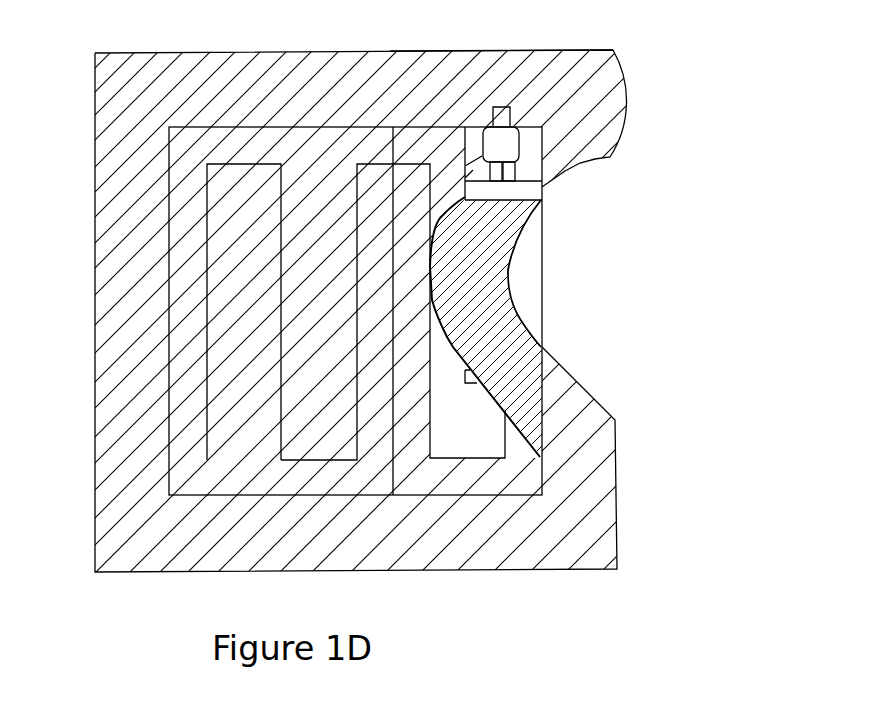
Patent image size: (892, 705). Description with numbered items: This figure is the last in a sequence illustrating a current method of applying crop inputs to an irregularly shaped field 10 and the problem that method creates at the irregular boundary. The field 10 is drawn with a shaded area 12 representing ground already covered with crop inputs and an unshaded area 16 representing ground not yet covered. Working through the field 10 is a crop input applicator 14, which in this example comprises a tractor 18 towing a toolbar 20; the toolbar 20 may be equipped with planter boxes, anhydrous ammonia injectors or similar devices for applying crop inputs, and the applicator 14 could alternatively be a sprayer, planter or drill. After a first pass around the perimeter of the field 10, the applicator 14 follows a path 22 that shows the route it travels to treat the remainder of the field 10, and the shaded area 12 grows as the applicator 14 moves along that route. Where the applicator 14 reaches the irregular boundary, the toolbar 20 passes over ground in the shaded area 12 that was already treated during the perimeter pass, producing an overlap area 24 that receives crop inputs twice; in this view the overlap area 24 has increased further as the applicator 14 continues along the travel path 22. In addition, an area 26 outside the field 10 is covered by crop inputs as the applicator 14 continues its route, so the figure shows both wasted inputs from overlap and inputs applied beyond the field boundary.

The irregularly shaped field 10 is at (652, 50).
The shaded area 12 is at (133, 297).
The crop input applicator 14 is at (484, 107).
The unshaded area 16 is at (473, 138).
The tractor 18 is at (503, 144).
The toolbar 20 is at (542, 187).
The path 22 is at (283, 178).
The overlap area 24 is at (525, 362).
The area outside the field 26 is at (523, 275).